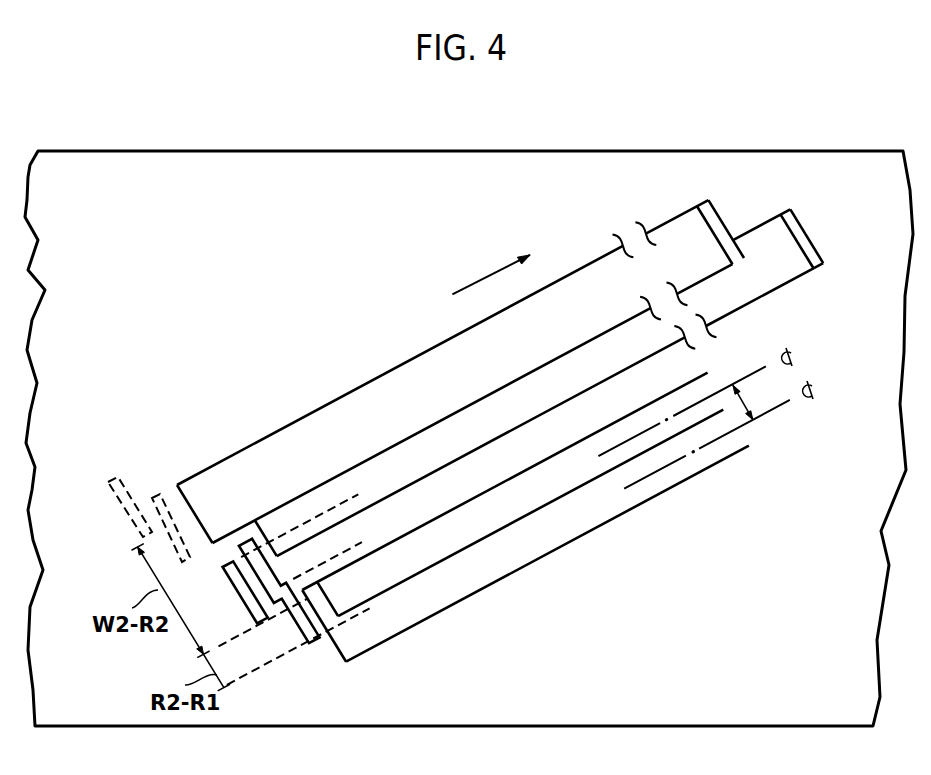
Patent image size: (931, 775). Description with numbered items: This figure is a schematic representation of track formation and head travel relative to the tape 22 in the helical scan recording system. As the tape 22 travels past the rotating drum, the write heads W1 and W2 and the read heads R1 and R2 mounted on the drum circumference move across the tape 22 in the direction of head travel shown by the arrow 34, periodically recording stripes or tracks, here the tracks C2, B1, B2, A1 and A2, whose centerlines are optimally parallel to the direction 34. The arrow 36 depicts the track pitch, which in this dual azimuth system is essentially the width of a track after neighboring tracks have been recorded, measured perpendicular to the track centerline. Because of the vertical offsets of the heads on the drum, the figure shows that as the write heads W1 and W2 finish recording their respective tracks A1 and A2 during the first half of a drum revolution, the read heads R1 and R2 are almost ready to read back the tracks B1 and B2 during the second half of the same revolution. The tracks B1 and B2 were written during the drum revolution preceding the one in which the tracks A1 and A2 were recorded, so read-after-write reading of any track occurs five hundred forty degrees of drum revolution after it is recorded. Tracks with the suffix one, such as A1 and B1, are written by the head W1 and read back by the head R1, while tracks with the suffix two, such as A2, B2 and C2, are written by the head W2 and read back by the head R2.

The tape 22 is at (322, 151).
The arrow indicating direction of head travel 34 is at (480, 290).
The arrow indicating track pitch 36 is at (741, 398).
The track A2 is at (455, 376).
The track A1 is at (483, 430).
The track B2 is at (515, 455).
The track B1 is at (532, 493).
The track C2 is at (567, 518).
The read head R1 is at (297, 623).
The read head R2 is at (253, 617).
The write head W1 is at (804, 248).
The write head W2 is at (727, 244).